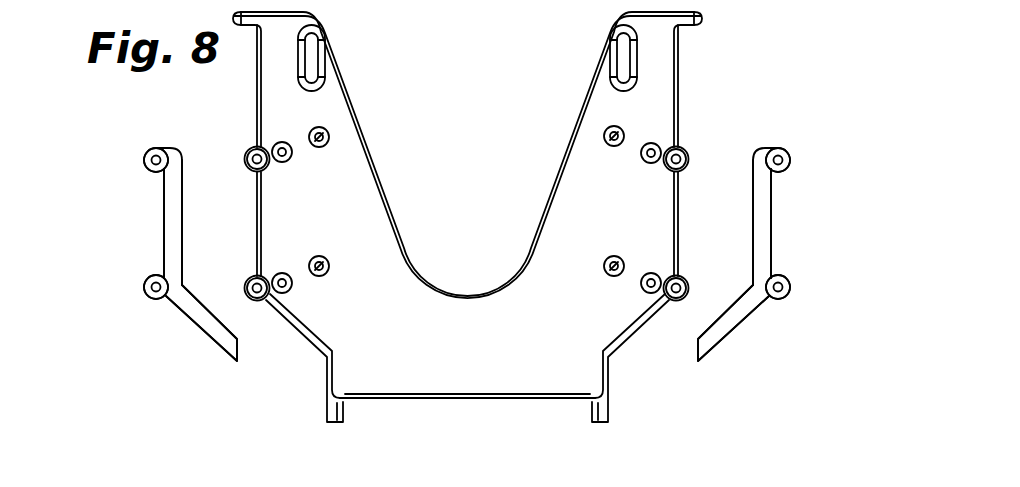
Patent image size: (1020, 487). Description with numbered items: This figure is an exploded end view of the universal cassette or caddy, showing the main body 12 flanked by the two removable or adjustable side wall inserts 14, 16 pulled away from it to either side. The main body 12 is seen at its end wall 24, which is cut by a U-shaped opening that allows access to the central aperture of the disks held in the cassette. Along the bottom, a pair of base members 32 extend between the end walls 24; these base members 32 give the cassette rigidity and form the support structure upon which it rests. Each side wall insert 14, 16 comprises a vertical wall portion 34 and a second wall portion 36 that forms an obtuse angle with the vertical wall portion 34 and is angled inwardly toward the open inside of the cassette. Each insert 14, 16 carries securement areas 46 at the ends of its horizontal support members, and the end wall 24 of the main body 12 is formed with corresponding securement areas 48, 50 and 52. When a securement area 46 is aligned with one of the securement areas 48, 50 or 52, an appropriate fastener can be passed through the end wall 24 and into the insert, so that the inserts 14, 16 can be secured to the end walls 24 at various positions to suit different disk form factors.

The main body 12 is at (717, 73).
The side wall insert 14 is at (174, 310).
The side wall insert 16 is at (760, 310).
The end wall 24 is at (468, 363).
The base member 32 is at (327, 382).
The vertical wall portion 34 is at (172, 234).
The second wall portion 36 is at (215, 330).
The securement area 46 is at (144, 159).
The securement area 48 is at (250, 154).
The securement area 50 is at (278, 142).
The securement area 52 is at (330, 134).